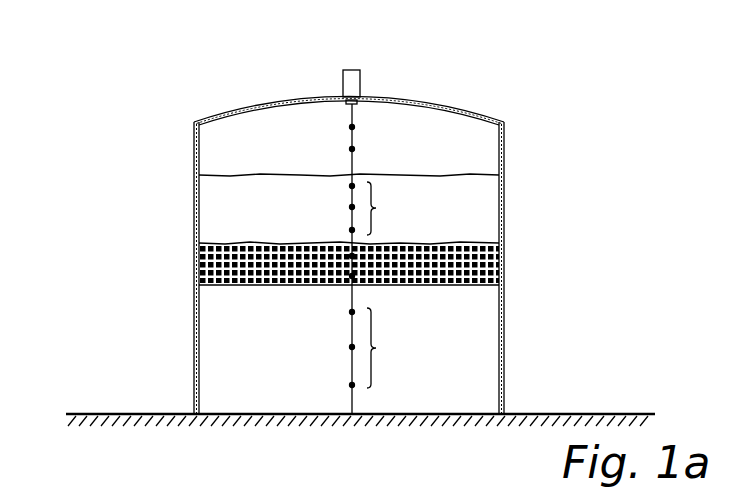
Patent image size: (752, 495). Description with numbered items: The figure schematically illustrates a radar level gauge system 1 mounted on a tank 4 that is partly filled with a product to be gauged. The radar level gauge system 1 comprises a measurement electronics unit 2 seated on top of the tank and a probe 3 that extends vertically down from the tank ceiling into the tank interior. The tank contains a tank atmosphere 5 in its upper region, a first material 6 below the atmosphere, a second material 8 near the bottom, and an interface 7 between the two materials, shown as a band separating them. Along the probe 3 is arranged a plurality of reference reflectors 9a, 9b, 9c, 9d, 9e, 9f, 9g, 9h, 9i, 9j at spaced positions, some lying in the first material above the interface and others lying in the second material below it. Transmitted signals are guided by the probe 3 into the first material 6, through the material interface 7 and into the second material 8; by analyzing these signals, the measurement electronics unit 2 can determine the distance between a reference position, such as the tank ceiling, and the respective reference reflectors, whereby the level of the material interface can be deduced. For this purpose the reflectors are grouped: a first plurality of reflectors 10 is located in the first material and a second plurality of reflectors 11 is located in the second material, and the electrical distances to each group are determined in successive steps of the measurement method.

The radar level gauge system 1 is at (367, 70).
The measurement electronics unit 2 is at (343, 80).
The probe 3 is at (352, 137).
The tank 4 is at (503, 128).
The tank atmosphere 5 is at (480, 157).
The first material 6 is at (480, 195).
The interface 7 is at (487, 262).
The second material 8 is at (483, 330).
The reference reflector 9a is at (352, 127).
The reference reflector 9b is at (352, 149).
The reference reflector 9c is at (352, 186).
The reference reflector 9d is at (352, 207).
The reference reflector 9e is at (352, 230).
The reference reflector 9f is at (352, 256).
The reference reflector 9g is at (352, 276).
The reference reflector 9h is at (352, 312).
The reference reflector 9i is at (352, 347).
The reference reflector 9j is at (352, 385).
The first plurality of reflectors 10 is at (387, 208).
The second plurality of reflectors 11 is at (387, 348).